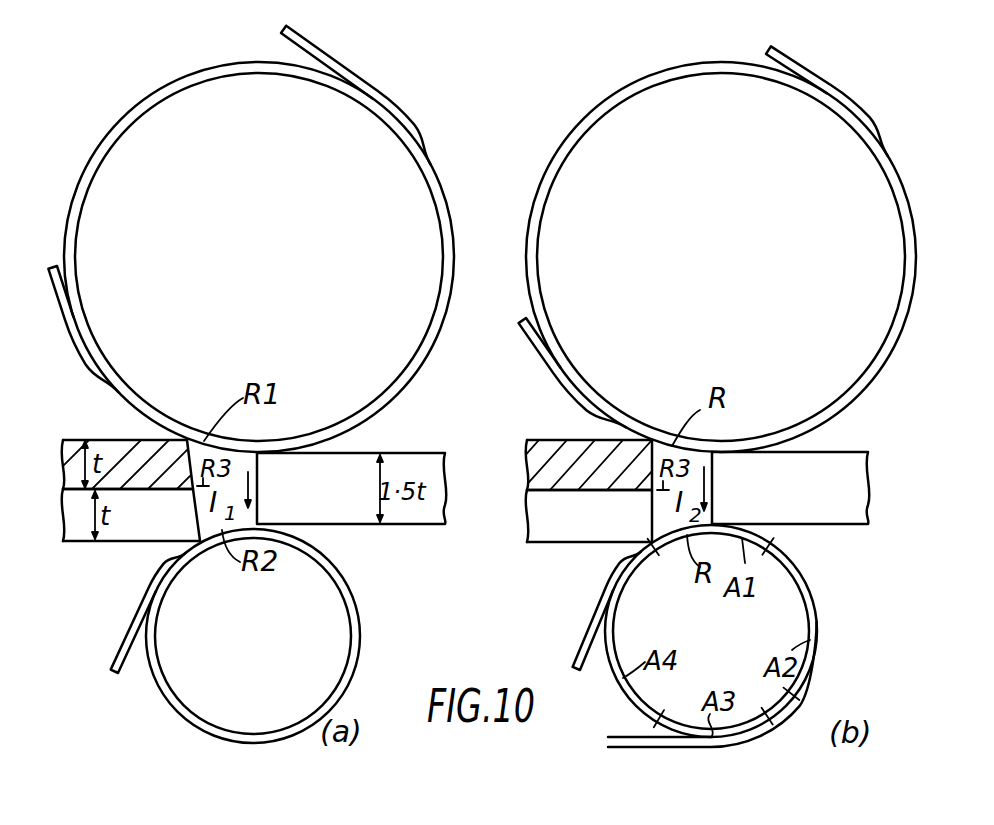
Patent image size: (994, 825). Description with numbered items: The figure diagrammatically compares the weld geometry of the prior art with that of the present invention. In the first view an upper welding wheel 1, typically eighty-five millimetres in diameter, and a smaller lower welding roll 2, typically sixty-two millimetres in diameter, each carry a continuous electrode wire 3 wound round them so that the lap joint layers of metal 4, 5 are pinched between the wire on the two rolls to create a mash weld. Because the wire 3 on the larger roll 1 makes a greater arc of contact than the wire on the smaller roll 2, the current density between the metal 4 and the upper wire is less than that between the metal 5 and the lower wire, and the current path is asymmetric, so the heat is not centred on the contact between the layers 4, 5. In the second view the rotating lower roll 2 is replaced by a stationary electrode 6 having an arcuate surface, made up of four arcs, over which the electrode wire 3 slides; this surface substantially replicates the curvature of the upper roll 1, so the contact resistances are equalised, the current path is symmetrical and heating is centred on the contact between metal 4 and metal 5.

In FIG. 10a, the upper welding wheel 1 is at (153, 132).
In FIG. 10b, the upper welding wheel 1 is at (618, 123).
In FIG. 10a, the lower welding roll 2 is at (185, 688).
In FIG. 10a, the continuous electrode wire 3 is at (313, 55).
In FIG. 10b, the continuous electrode wire 3 is at (794, 70).
In FIG. 10a, the lap joint layer of metal 4 is at (76, 448).
In FIG. 10b, the lap joint layer of metal 4 is at (553, 448).
In FIG. 10a, the lap joint layer of metal 5 is at (78, 534).
In FIG. 10b, the lap joint layer of metal 5 is at (567, 533).
In FIG. 10b, the stationary electrode 6 is at (802, 698).